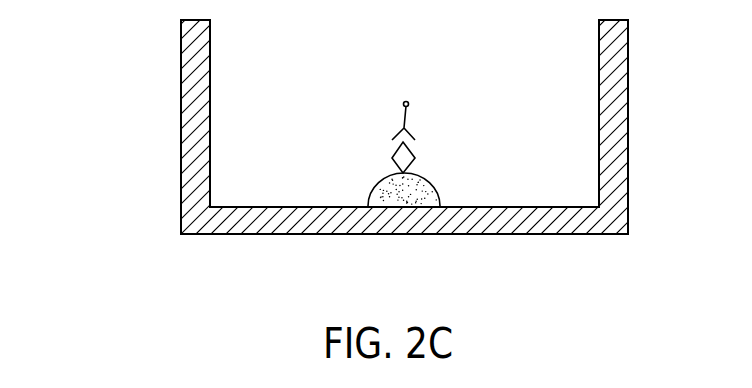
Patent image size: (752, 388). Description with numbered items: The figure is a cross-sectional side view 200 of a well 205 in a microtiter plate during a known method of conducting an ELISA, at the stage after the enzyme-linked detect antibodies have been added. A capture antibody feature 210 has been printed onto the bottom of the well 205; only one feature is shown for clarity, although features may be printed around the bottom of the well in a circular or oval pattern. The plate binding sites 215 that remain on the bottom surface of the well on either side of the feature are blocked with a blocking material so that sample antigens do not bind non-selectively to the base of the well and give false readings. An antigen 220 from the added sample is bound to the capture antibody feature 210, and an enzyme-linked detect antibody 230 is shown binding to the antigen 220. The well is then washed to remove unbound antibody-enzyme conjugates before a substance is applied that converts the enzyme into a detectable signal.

The plate 200 is at (157, 207).
The well 205 is at (613, 224).
The capture antibody feature 210 is at (432, 188).
The plate binding sites 215 is at (288, 206).
The antigen 220 is at (407, 160).
The enzyme-linked detect antibody 230 is at (410, 104).